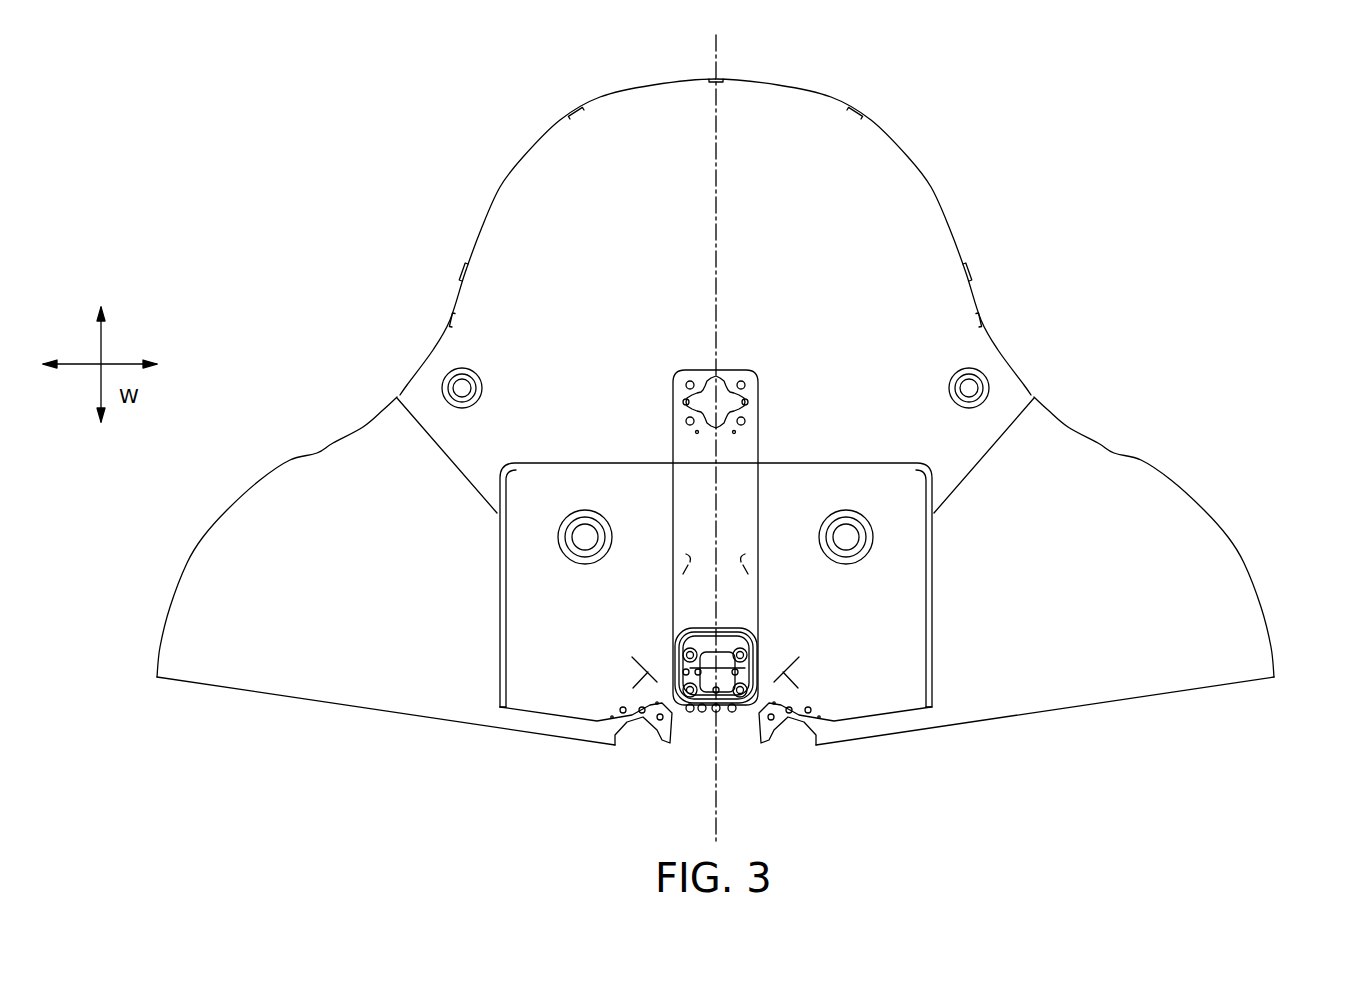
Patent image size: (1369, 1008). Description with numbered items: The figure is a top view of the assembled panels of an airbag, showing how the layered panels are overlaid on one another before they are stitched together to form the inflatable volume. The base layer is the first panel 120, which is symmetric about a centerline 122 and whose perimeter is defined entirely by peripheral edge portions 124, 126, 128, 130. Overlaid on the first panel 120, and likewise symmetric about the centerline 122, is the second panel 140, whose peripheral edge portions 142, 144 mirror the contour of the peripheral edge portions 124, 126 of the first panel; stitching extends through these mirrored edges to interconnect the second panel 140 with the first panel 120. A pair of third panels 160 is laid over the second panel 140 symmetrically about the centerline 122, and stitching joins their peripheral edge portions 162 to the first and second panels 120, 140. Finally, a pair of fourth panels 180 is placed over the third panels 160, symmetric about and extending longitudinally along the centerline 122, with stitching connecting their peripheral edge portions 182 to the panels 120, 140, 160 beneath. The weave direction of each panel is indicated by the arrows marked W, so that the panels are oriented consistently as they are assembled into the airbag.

The first panel 120 is at (757, 392).
The centerline 122 is at (717, 793).
The peripheral edge portion 124 is at (558, 229).
The peripheral edge portion 126 is at (874, 237).
The peripheral edge portion 128 is at (260, 694).
The peripheral edge portion 130 is at (1127, 698).
The second panel 140 is at (715, 217).
The peripheral edge portion 142 is at (603, 98).
The peripheral edge portion 144 is at (887, 132).
The third panel 160 is at (692, 625).
The peripheral edge portion 162 is at (503, 597).
The fourth panel 180 is at (634, 567).
The peripheral edge portion 182 is at (760, 610).